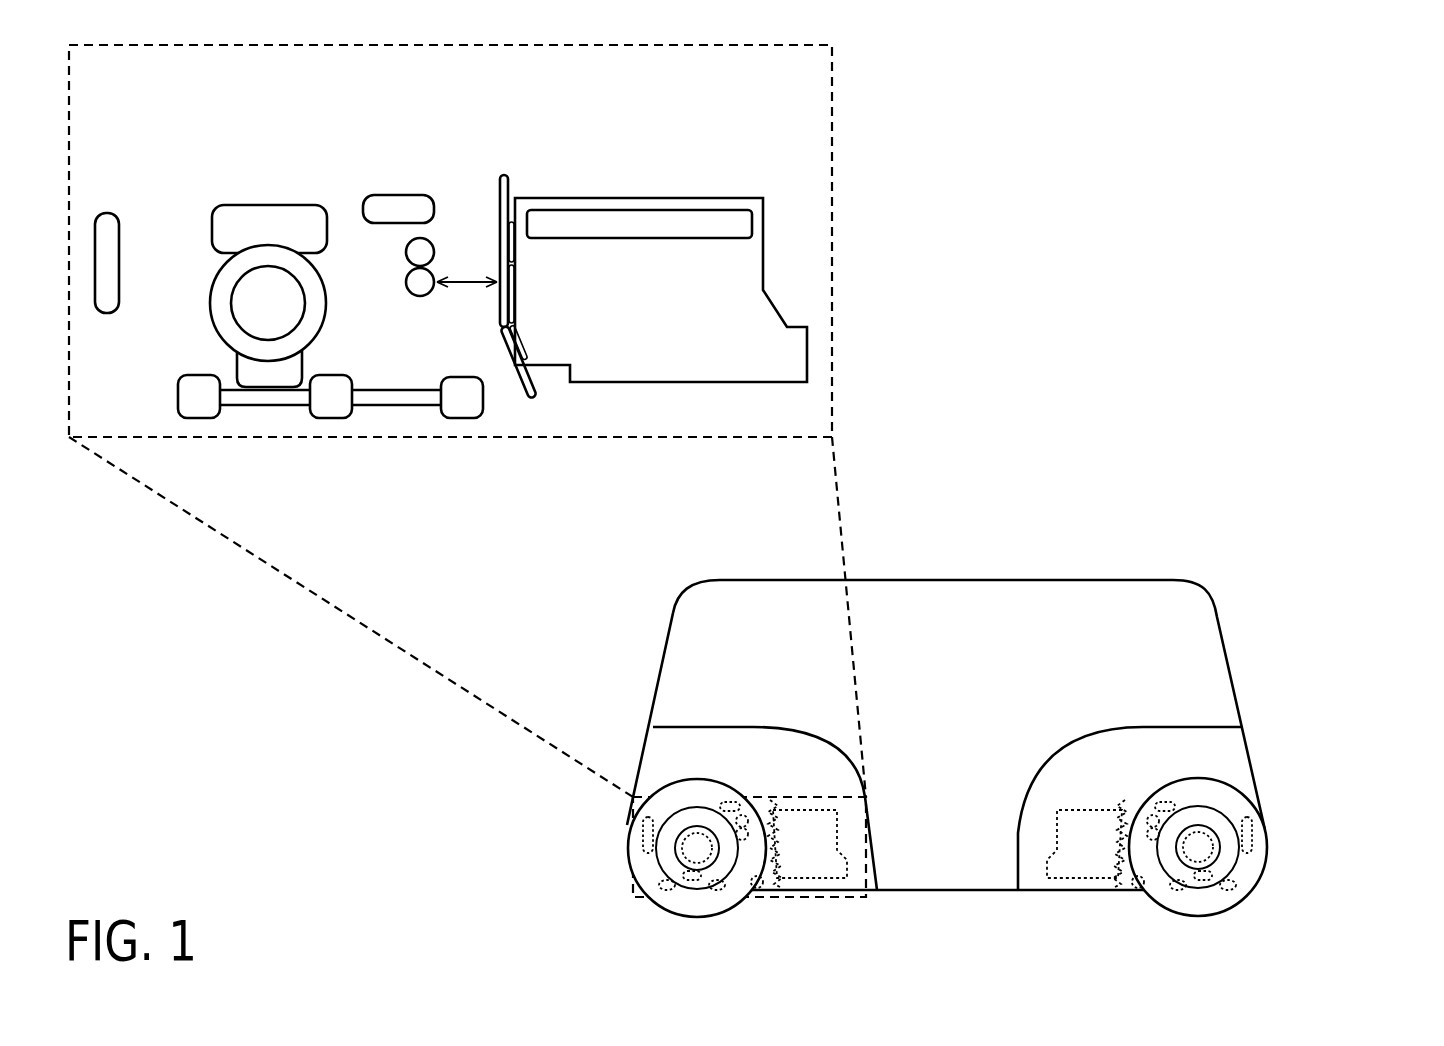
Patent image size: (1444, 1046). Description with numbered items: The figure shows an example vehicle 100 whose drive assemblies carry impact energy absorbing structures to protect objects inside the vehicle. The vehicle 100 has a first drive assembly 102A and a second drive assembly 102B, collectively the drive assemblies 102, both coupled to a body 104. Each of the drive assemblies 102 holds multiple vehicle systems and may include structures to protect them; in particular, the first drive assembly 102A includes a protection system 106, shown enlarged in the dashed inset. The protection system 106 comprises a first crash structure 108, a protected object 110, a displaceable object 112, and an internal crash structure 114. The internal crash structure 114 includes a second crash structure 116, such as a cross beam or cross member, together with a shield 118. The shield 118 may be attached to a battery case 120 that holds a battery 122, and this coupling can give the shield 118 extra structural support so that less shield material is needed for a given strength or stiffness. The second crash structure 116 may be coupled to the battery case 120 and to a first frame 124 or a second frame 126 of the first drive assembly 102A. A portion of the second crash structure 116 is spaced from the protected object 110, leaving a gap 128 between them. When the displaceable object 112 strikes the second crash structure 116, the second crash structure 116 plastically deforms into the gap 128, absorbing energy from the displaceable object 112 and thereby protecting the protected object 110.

The vehicle 100 is at (1180, 373).
The drive assemblies 102 is at (1332, 927).
The first drive assembly 102A is at (795, 898).
The second drive assembly 102B is at (1067, 898).
The body 104 is at (1018, 578).
The protection system 106 is at (567, 282).
The first crash structure 108 is at (105, 213).
The protected object 110 is at (790, 281).
The displaceable object 112 is at (257, 377).
The internal crash structure 114 is at (398, 339).
The second crash structure 116 is at (430, 240).
The shield 118 is at (507, 187).
The battery case 120 is at (765, 253).
The battery 122 is at (743, 220).
The first frame 124 is at (385, 202).
The second frame 126 is at (457, 403).
The gap 128 is at (468, 292).